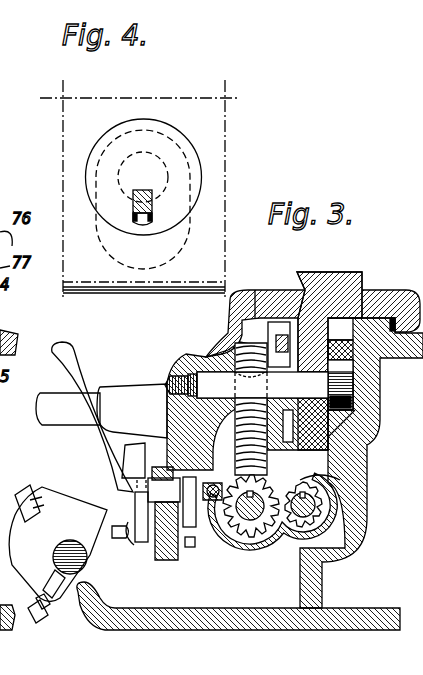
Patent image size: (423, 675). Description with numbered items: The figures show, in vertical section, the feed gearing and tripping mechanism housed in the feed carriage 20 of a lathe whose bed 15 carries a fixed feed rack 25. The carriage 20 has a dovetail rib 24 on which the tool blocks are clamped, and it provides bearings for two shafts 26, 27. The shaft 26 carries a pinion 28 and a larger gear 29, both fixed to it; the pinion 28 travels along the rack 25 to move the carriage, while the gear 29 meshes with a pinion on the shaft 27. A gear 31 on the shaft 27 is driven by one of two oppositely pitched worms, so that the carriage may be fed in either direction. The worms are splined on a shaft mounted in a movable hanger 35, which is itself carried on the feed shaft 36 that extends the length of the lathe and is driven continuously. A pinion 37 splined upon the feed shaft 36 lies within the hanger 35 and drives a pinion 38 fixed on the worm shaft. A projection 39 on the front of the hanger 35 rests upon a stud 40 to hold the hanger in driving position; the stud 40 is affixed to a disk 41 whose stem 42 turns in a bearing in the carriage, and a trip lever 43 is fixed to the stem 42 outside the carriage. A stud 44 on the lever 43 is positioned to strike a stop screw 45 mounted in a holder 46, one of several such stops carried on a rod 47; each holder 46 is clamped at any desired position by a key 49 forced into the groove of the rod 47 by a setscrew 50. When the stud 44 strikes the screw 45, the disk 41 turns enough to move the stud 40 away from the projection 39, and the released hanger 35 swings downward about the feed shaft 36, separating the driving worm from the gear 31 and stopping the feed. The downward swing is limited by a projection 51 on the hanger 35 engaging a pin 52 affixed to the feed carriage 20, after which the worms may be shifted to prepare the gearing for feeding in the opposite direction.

In FIG. 3, the bed of the lathe 15 is at (358, 443).
In FIG. 4, the feed carriage 20 is at (139, 283).
In FIG. 3, the feed carriage 20 is at (275, 291).
In FIG. 3, the dovetail rib 24 is at (350, 282).
In FIG. 3, the feed rack 25 is at (380, 362).
In FIG. 3, the shaft 26 is at (246, 385).
In FIG. 3, the shaft 27 is at (62, 418).
In FIG. 3, the pinion 28 is at (345, 391).
In FIG. 3, the gear 29 is at (268, 327).
In FIG. 3, the gear 31 is at (212, 346).
In FIG. 3, the hanger 35 is at (272, 550).
In FIG. 3, the feed shaft 36 is at (318, 512).
In FIG. 3, the pinion 37 is at (333, 481).
In FIG. 3, the pinion 38 is at (245, 545).
In FIG. 4, the projection 39 is at (148, 190).
In FIG. 4, the stud 40 is at (143, 225).
In FIG. 4, the disk 41 is at (185, 140).
In FIG. 4, the stem 42 is at (127, 162).
In FIG. 3, the trip lever 43 is at (145, 542).
In FIG. 3, the stud 44 is at (134, 546).
In FIG. 3, the stop screw 45 is at (118, 539).
In FIG. 3, the holder 46 is at (58, 543).
In FIG. 3, the rod 47 is at (72, 545).
In FIG. 3, the key 49 is at (43, 578).
In FIG. 3, the setscrew 50 is at (40, 608).
In FIG. 3, the projection 51 is at (164, 519).
In FIG. 3, the pin 52 is at (192, 548).